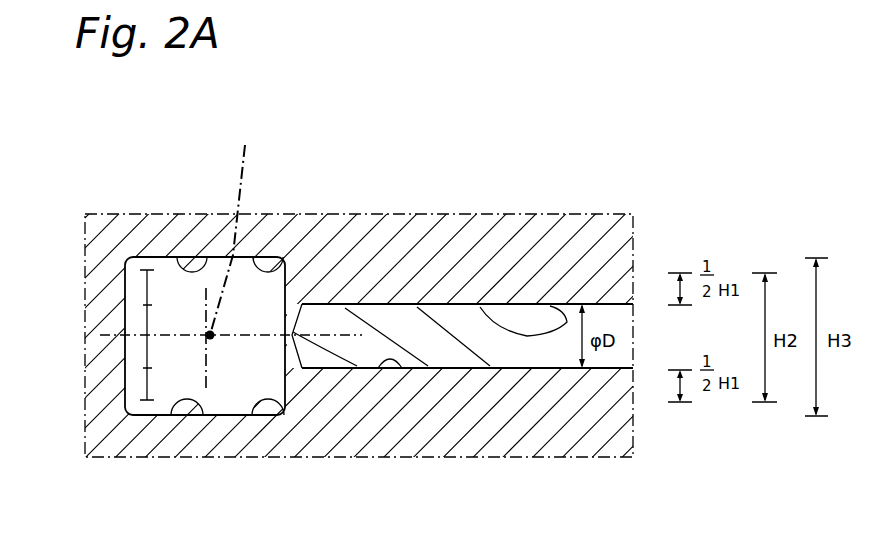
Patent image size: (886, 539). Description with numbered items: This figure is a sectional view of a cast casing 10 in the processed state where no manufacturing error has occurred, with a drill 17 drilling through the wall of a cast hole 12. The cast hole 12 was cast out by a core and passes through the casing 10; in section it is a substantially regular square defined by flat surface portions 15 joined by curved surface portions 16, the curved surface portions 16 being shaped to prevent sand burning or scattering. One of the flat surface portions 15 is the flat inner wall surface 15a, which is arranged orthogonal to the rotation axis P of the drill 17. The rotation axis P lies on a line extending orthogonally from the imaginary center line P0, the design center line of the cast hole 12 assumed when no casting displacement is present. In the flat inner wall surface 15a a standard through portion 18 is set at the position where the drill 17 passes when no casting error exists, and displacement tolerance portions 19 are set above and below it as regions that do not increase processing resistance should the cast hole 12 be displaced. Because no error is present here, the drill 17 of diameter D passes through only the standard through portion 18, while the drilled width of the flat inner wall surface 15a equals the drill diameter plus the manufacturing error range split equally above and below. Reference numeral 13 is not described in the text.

The casing 10 is at (490, 214).
The cast hole 12 is at (172, 415).
The drill 13 is at (380, 362).
The flat surface portions 15 is at (178, 258).
The flat inner wall surface 15a is at (248, 417).
The curved surface portions 16 is at (252, 257).
The drill 17 is at (543, 350).
The standard through portion 18 is at (147, 318).
The displacement tolerance portions 19 is at (147, 287).
The rotation axis P is at (330, 335).
The imaginary center line P0 is at (237, 261).